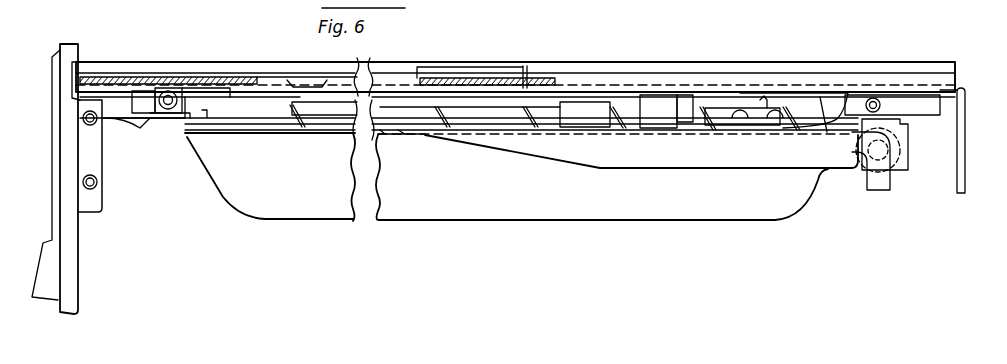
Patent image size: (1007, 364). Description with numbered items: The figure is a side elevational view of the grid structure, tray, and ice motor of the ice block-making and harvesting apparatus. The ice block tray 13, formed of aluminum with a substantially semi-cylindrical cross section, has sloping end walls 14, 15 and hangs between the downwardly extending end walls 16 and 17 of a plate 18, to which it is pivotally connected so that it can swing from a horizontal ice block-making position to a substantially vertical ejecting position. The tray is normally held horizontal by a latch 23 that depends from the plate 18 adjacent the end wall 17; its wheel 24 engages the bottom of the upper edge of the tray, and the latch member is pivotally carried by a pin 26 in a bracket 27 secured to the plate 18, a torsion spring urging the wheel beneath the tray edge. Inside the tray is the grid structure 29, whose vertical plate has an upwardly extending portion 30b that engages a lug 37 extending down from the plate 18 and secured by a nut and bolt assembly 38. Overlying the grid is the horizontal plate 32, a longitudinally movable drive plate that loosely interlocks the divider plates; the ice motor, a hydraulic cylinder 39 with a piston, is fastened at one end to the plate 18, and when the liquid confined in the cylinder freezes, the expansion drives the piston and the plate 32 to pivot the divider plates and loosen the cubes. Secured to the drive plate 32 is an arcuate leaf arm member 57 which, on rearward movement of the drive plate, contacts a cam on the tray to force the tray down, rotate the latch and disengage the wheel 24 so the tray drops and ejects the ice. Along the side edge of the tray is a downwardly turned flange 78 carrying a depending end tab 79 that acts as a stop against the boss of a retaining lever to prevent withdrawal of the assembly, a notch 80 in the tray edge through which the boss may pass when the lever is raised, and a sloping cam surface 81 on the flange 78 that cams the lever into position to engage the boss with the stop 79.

The ice block tray 13 is at (458, 227).
The sloping end wall 14 is at (223, 197).
The sloping end wall 15 is at (792, 207).
The end wall 16 is at (74, 95).
The end wall 17 is at (963, 152).
The plate 18 is at (531, 80).
The latch 23 is at (914, 162).
The wheel 24 is at (862, 162).
The pin 26 is at (874, 98).
The bracket 27 is at (933, 104).
The grid structure 29 is at (566, 96).
The upwardly extending portion 30b is at (140, 115).
The horizontal plate 32 is at (262, 120).
The lug 37 is at (166, 92).
The nut and bolt assembly 38 is at (176, 82).
The hydraulic cylinder 39 is at (465, 105).
The arcuate leaf arm member 57 is at (828, 105).
The downwardly turned flange 78 is at (676, 166).
The end tab 79 is at (873, 192).
The notch 80 is at (417, 136).
The sloping cam surface 81 is at (498, 157).